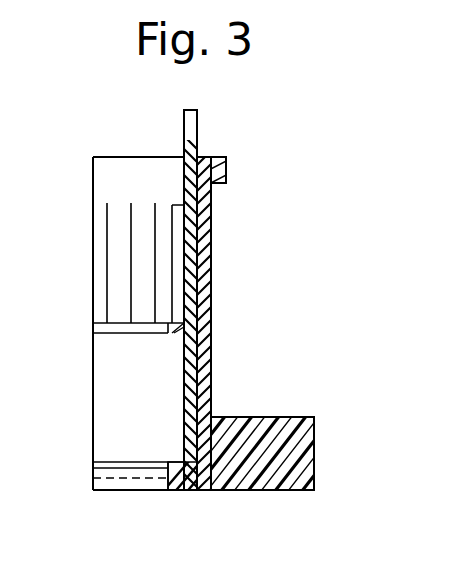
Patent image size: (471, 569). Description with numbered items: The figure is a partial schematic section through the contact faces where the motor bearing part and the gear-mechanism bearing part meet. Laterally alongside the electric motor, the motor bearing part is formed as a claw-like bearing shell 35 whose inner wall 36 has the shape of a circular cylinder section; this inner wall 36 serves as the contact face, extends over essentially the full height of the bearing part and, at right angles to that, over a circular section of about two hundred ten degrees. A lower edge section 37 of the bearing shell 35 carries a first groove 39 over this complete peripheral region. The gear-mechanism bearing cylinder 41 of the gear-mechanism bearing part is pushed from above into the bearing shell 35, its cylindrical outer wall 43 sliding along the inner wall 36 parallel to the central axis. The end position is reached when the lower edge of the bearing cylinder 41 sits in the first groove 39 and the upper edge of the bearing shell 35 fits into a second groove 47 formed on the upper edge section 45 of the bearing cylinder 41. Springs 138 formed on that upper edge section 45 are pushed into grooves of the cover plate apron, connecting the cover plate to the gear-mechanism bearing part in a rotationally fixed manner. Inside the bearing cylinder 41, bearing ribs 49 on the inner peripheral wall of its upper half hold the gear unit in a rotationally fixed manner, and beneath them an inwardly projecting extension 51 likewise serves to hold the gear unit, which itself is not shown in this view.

The springs 138 is at (184, 123).
The upper edge section 45 is at (202, 164).
The second groove 47 is at (225, 175).
The outer wall 43 is at (208, 218).
The claw-like bearing shell 35 is at (206, 266).
The inner wall 36 is at (202, 307).
The gear-mechanism bearing cylinder 41 is at (190, 220).
The bearing ribs 49 is at (182, 268).
The inwardly projecting extension 51 is at (140, 333).
The first groove 39 is at (186, 490).
The lower edge section 37 is at (212, 460).